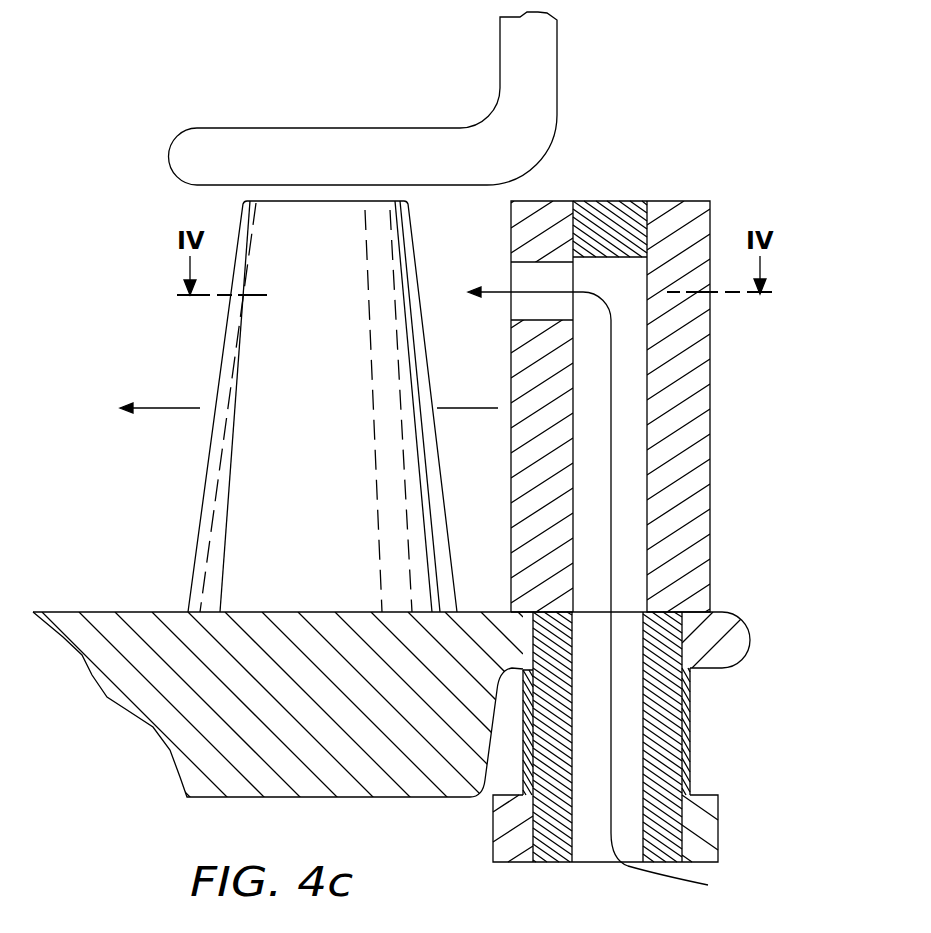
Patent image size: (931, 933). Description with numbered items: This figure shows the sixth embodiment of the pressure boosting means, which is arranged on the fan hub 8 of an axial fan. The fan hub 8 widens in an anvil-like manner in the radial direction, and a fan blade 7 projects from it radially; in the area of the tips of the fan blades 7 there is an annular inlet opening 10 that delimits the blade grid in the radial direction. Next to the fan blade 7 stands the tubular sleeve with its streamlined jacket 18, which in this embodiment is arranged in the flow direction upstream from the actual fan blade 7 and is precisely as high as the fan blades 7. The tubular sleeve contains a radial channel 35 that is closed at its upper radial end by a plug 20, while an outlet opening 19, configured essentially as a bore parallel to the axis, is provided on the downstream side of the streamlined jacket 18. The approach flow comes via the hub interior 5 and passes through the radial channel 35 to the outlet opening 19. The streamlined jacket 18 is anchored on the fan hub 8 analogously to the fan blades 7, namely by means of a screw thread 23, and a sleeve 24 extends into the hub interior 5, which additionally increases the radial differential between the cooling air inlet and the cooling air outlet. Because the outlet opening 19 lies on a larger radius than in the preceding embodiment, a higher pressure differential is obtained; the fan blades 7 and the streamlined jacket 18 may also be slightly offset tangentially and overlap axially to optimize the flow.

The hub interior 5 is at (795, 882).
The fan blade 7 is at (245, 338).
The fan hub 8 is at (378, 788).
The annular inlet opening 10 is at (240, 136).
The streamlined jacket 18 is at (700, 340).
The outlet opening 19 is at (515, 282).
The plug 20 is at (617, 206).
The screw thread 23 is at (690, 645).
The sleeve 24 is at (644, 731).
The radial channel 35 is at (628, 466).